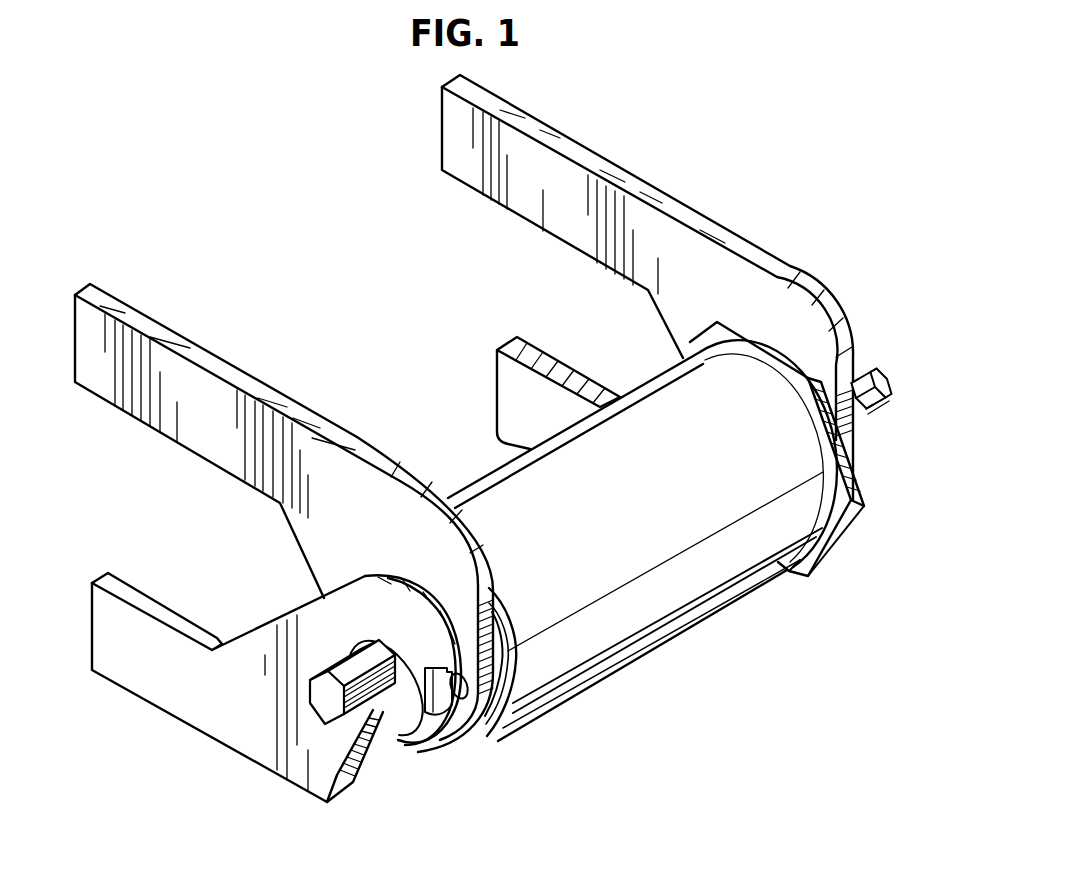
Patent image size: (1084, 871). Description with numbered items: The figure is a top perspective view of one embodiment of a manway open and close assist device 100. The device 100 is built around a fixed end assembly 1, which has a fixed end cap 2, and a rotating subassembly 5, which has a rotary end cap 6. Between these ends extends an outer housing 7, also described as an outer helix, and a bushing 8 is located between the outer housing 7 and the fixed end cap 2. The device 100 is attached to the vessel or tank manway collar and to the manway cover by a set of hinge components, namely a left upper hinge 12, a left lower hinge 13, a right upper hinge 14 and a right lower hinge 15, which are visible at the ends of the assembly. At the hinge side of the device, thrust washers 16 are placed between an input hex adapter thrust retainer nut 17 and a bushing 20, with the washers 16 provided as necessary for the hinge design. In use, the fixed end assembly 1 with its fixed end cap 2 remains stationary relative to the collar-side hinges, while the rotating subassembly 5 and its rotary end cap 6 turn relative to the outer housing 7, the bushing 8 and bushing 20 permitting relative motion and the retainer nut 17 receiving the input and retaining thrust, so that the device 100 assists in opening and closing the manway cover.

The fixed end assembly 1 is at (864, 560).
The fixed end cap 2 is at (836, 545).
The rotating subassembly 5 is at (641, 686).
The rotary end cap 6 is at (513, 680).
The outer housing/outer helix 7 is at (683, 593).
The bushing 8 is at (820, 563).
The left upper hinge 12 is at (488, 695).
The left lower hinge 13 is at (353, 777).
The right upper hinge 14 is at (858, 462).
The right lower hinge 15 is at (540, 362).
The thrust washers 16 is at (427, 713).
The input hex adapter thrust retainer nut 17 is at (888, 412).
The bushing 20 is at (480, 742).
The manway open and close assist device 100 is at (680, 554).